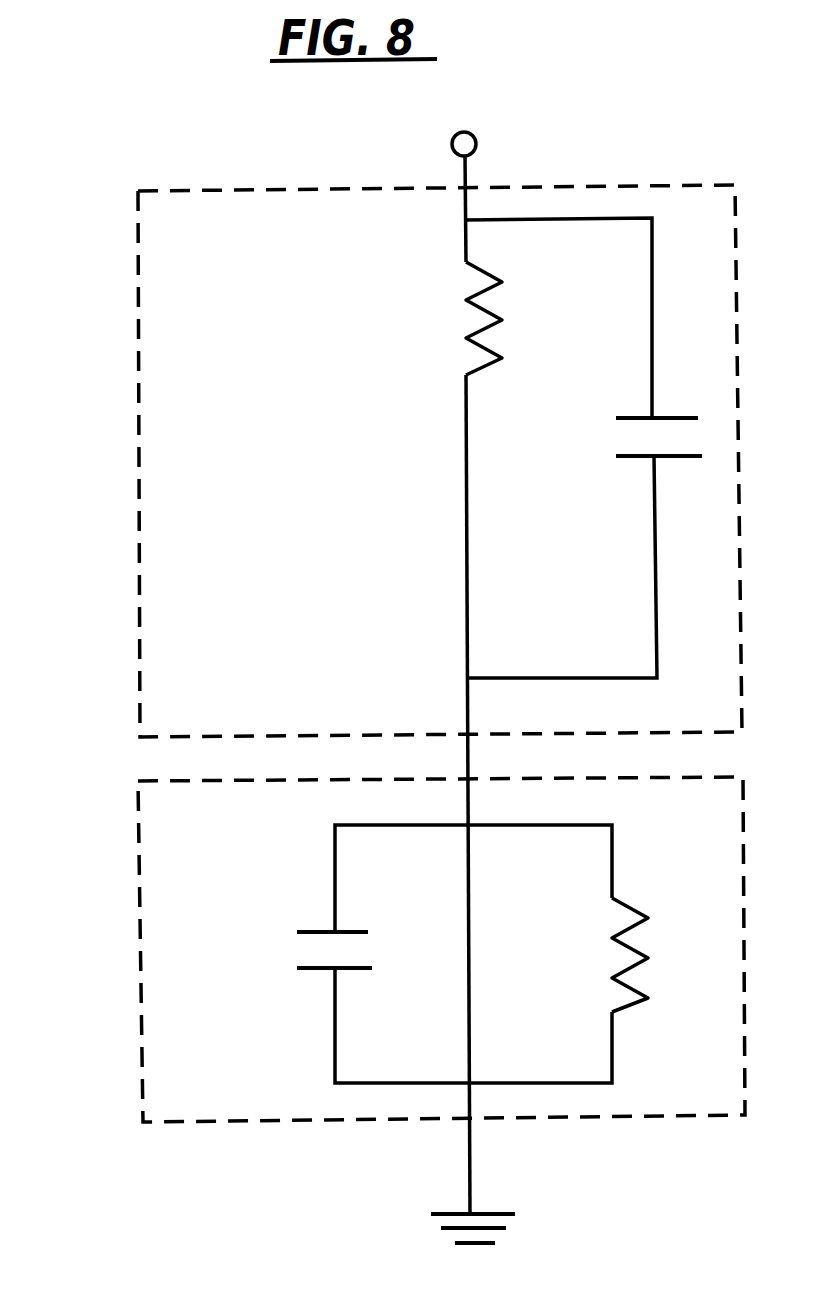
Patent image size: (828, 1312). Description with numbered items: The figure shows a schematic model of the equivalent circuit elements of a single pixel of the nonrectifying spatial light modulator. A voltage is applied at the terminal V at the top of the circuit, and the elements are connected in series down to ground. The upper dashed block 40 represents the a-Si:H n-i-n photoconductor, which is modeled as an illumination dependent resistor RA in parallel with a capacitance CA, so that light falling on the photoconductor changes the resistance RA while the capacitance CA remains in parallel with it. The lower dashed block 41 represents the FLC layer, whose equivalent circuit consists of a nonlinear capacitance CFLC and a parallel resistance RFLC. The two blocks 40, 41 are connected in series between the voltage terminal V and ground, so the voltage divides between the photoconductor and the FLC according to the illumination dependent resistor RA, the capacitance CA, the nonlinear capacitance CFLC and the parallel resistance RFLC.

The a-Si:H photoconductor equivalent circuit 40 is at (137, 454).
The FLC equivalent circuit 41 is at (137, 845).
The applied voltage terminal V is at (476, 136).
The illumination dependent resistor RA is at (449, 318).
The capacitance of the a-Si:H photoconductor CA is at (625, 446).
The parallel resistance of the FLC RFLC is at (574, 939).
The nonlinear capacitance of the FLC CFLC is at (359, 974).